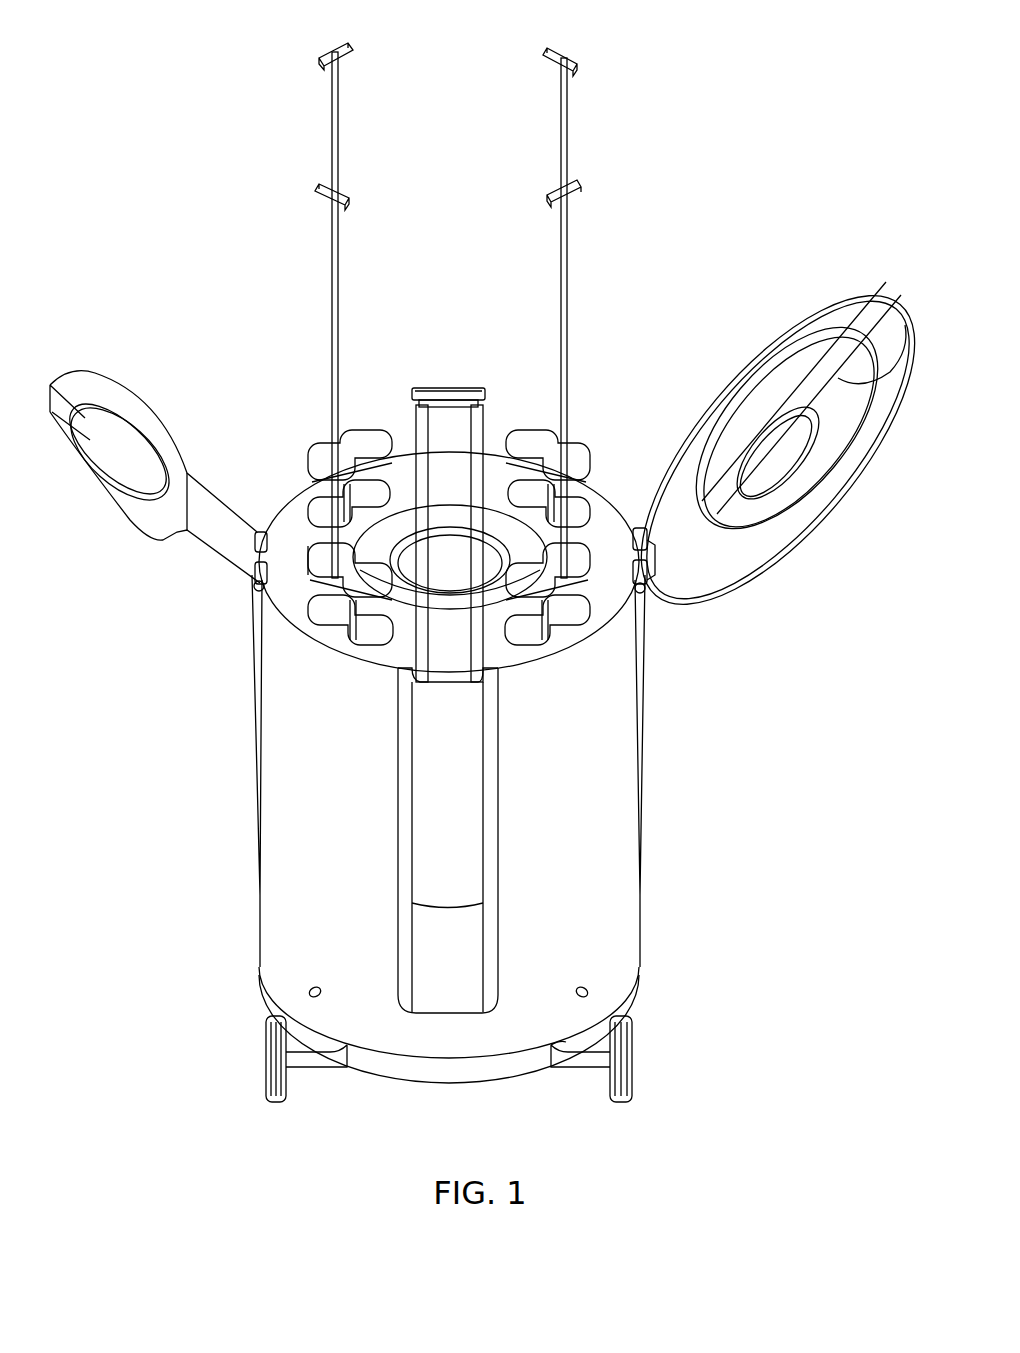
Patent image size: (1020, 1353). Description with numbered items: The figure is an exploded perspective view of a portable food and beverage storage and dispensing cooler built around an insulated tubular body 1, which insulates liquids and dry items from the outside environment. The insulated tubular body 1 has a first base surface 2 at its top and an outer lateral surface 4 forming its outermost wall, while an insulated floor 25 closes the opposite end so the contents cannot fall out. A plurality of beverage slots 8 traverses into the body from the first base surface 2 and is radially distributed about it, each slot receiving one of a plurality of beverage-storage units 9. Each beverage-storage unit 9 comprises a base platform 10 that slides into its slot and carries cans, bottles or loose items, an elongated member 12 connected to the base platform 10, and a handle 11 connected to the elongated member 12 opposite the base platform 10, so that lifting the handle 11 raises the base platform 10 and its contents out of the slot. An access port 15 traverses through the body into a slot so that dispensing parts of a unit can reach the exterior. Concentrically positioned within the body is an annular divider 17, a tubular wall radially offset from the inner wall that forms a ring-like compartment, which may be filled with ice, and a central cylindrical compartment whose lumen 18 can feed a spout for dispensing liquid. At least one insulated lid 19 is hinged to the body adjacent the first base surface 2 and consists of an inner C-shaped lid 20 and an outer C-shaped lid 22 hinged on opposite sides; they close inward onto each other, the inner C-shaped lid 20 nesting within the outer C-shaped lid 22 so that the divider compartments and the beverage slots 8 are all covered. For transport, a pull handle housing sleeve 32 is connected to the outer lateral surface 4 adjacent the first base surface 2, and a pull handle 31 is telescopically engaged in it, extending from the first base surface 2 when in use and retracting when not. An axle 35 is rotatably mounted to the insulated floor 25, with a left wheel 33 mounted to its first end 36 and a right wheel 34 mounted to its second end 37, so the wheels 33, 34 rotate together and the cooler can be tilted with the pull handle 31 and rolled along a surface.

The insulated tubular body 1 is at (606, 488).
The first base surface 2 is at (441, 490).
The outer lateral surface 4 is at (566, 770).
The plurality of beverage slots 8 is at (325, 612).
The plurality of beverage-storage units 9 is at (346, 160).
The base platform 10 is at (320, 465).
The handle 11 is at (352, 50).
The elongated member 12 is at (330, 143).
The access port 15 is at (312, 990).
The annular divider 17 is at (462, 600).
The lumen 18 is at (448, 540).
The at least one insulated lid 19 is at (82, 500).
The inner C-shaped lid 20 is at (128, 407).
The outer C-shaped lid 22 is at (800, 320).
The insulated floor 25 is at (640, 990).
The pull handle 31 is at (440, 390).
The pull handle housing sleeve 32 is at (498, 700).
The left wheel 33 is at (631, 1060).
The right wheel 34 is at (266, 1050).
The axle 35 is at (576, 1068).
The first end 36 is at (605, 1062).
The second end 37 is at (292, 1062).